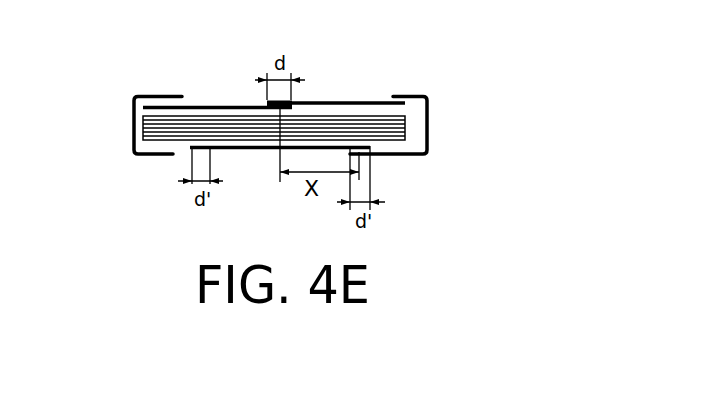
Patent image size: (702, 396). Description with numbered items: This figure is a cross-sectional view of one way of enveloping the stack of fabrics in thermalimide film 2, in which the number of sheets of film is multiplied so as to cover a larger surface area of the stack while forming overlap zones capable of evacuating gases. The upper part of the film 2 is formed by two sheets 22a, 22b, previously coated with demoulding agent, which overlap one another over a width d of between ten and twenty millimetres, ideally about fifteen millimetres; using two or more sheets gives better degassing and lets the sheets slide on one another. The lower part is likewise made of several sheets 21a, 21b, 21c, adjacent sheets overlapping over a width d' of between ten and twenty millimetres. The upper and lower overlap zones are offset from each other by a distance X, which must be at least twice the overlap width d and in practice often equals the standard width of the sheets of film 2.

The film 2 is at (428, 130).
The sheet 22a is at (242, 106).
The sheet 22b is at (335, 102).
The lower electrode plate 21a is at (262, 150).
The right lead terminal 21b is at (397, 156).
The left lead terminal 21c is at (163, 156).